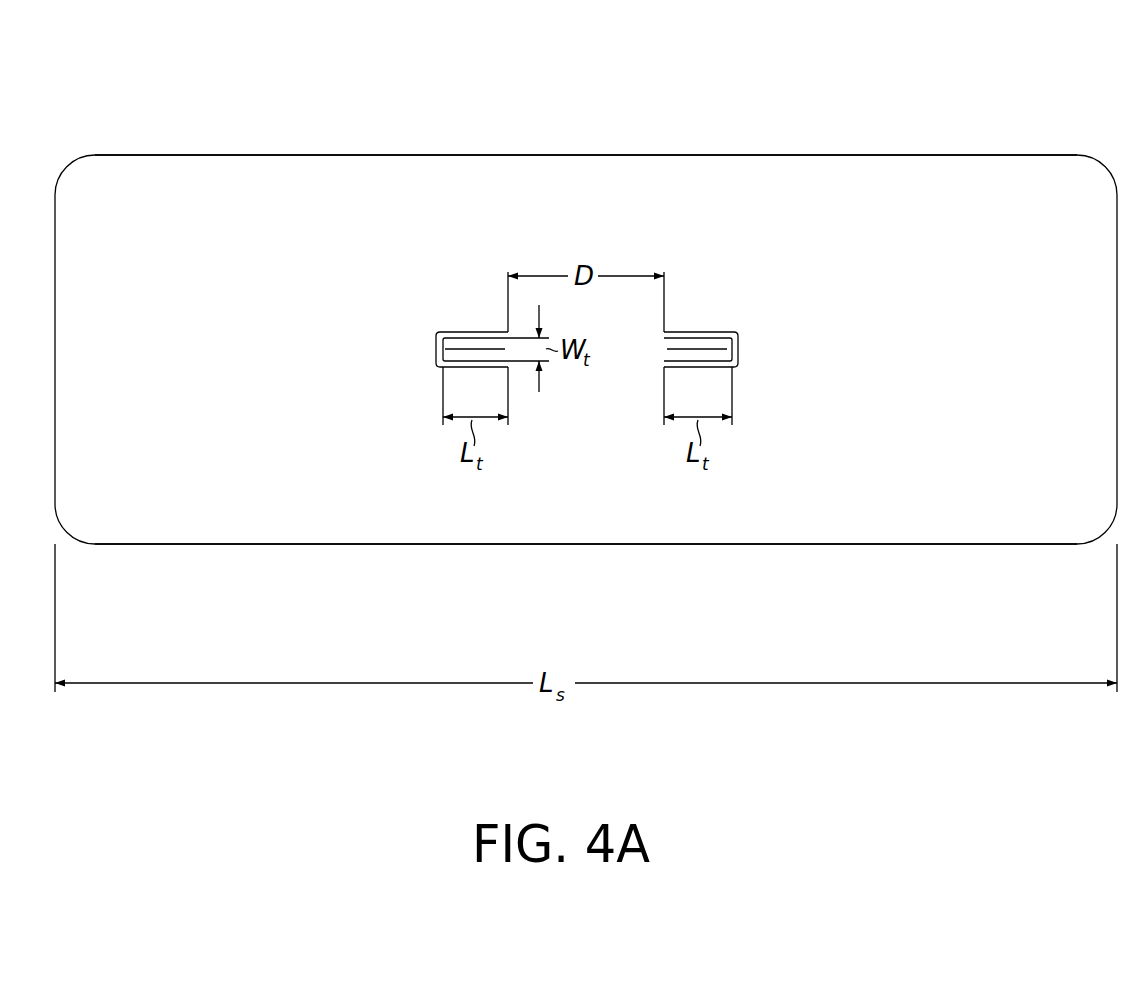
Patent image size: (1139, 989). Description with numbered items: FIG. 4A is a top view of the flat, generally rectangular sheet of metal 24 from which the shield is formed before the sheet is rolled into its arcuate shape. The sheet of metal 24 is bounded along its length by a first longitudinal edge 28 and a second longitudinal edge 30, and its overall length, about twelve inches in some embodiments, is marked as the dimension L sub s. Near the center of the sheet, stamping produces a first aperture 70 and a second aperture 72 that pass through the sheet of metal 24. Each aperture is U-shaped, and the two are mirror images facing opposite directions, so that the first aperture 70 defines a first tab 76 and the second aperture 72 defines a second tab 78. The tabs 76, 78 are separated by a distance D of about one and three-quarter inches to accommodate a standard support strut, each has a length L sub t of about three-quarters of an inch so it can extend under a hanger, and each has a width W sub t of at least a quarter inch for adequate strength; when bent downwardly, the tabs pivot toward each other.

The sheet of metal 24 is at (582, 112).
The first longitudinal edge 28 is at (423, 155).
The second longitudinal edge 30 is at (835, 544).
The first aperture 70 is at (470, 332).
The second aperture 72 is at (695, 332).
The first tab 76 is at (458, 349).
The second tab 78 is at (708, 349).